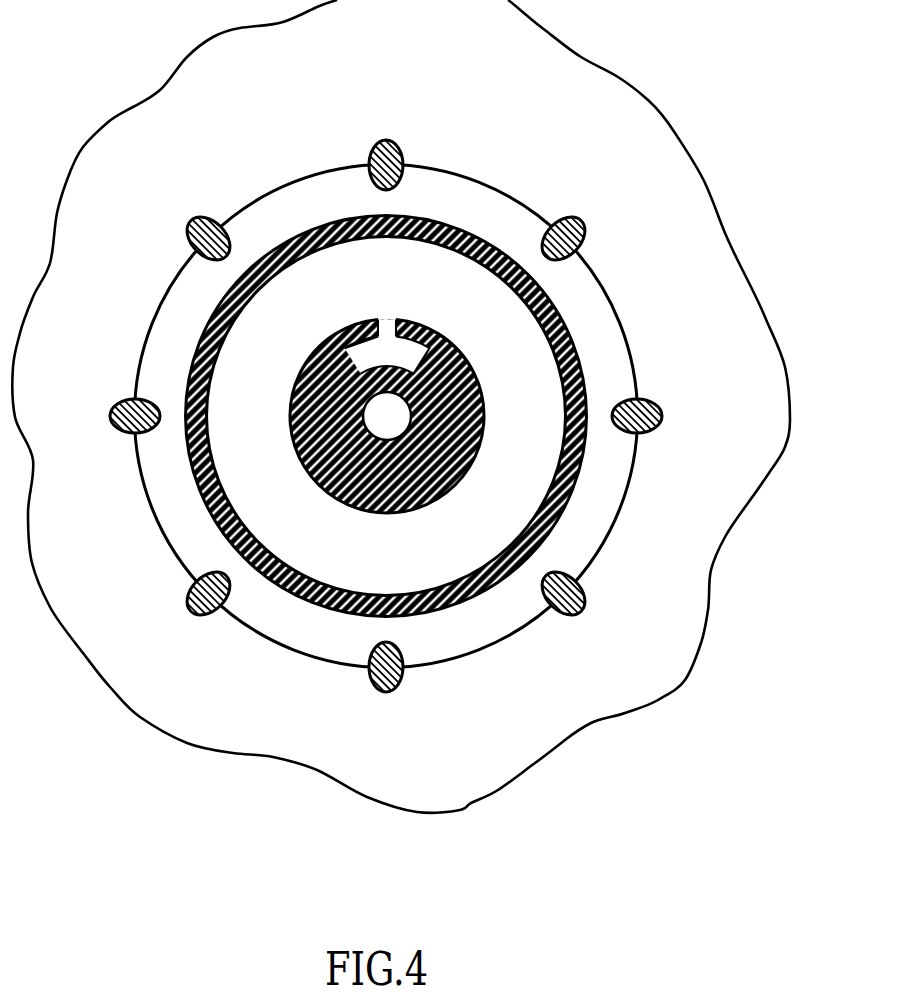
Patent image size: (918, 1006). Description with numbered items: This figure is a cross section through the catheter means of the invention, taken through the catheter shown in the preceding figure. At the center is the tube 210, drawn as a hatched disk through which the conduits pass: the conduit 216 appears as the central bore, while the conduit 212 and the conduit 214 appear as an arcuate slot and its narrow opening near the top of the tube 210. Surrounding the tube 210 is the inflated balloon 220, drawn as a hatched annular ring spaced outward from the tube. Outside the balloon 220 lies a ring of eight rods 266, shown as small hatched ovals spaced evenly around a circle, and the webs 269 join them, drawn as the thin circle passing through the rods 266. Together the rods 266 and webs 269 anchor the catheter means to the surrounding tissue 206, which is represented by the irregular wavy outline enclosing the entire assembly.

The tissue 206 is at (695, 212).
The webs 269 is at (461, 177).
The rods 266 is at (115, 405).
The inflated balloon 220 is at (283, 247).
The tube 210 is at (317, 390).
The conduit 216 is at (398, 413).
The conduit 212 is at (407, 358).
The conduit 214 is at (383, 328).